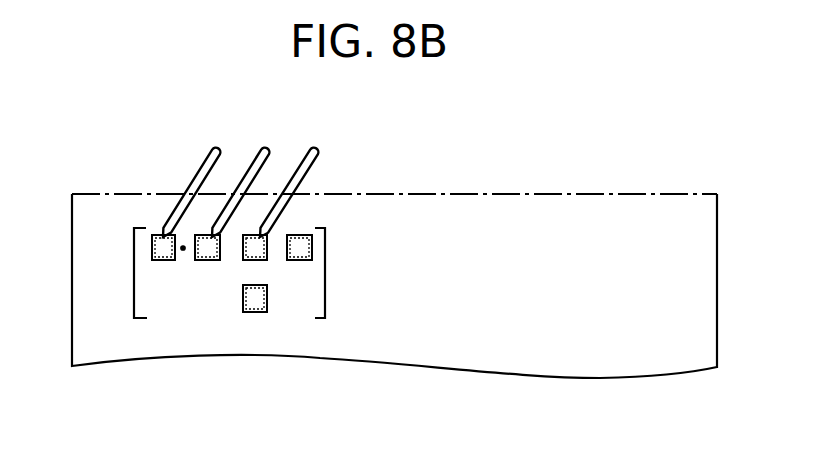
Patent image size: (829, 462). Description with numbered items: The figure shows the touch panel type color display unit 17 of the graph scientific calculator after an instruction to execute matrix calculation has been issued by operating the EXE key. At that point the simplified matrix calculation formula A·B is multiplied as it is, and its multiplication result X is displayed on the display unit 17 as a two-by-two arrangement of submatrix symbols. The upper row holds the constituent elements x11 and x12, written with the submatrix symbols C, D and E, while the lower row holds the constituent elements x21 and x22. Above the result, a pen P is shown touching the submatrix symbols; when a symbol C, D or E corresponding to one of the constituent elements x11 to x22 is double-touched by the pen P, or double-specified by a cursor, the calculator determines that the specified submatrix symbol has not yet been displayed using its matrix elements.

The touch panel type color display unit 17 is at (712, 258).
The multiplication result X is at (134, 238).
The pen P is at (318, 152).
The constituent element x11 is at (188, 236).
The constituent element x12 is at (287, 237).
The constituent element x21 is at (187, 308).
The constituent element x22 is at (282, 308).